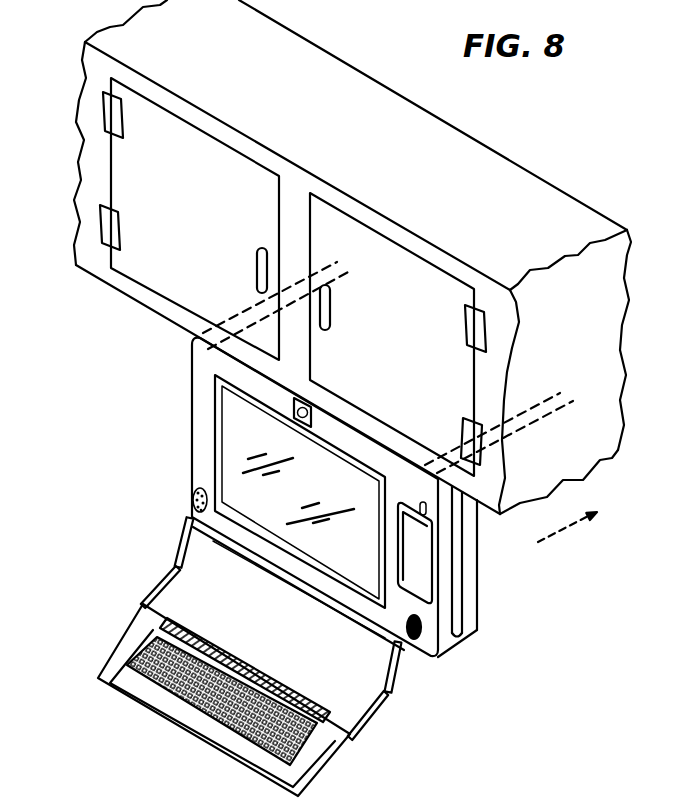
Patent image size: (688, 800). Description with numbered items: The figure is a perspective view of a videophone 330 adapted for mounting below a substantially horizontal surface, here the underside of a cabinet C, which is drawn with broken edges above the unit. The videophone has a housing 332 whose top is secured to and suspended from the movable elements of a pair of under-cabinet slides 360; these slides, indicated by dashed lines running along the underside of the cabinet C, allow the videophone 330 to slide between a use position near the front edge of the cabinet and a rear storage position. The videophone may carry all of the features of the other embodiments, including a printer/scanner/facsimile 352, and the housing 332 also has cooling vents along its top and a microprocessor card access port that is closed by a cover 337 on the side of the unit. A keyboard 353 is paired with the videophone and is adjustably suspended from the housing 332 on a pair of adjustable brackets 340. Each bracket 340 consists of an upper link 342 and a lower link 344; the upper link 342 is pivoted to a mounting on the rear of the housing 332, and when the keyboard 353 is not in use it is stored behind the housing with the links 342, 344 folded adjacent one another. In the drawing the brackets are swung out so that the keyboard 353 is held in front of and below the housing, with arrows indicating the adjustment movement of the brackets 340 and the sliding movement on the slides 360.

The cabinet C is at (87, 138).
The videophone 330 is at (78, 421).
The housing 332 is at (285, 495).
The cover 337 is at (457, 553).
The adjustable brackets 340 is at (282, 630).
The upper link 342 is at (184, 541).
The lower link 344 is at (178, 581).
The printer/scanner/facsimile 352 is at (190, 524).
The keyboard 353 is at (117, 678).
The under-cabinet slides 360 is at (341, 279).